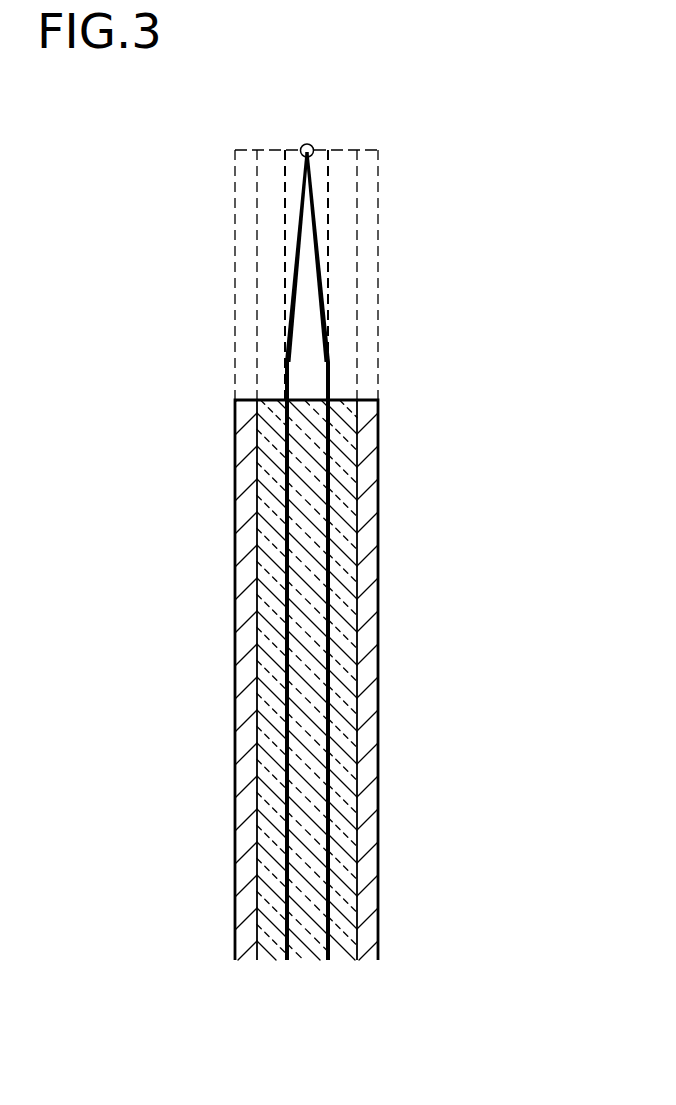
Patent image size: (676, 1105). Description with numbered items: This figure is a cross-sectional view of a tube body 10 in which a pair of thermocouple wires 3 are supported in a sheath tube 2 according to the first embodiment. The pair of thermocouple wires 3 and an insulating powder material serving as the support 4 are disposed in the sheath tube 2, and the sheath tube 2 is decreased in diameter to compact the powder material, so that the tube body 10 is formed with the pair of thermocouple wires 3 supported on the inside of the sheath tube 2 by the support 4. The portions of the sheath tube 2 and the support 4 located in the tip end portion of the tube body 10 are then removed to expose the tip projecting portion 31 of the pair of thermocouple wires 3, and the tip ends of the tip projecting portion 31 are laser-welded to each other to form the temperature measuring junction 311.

The tube body 10 is at (384, 528).
The sheath tube 2 is at (379, 630).
The thermocouple wires 3 is at (284, 693).
The support 4 is at (310, 742).
The tip projecting portion 31 is at (320, 269).
The temperature measuring junction 311 is at (308, 143).